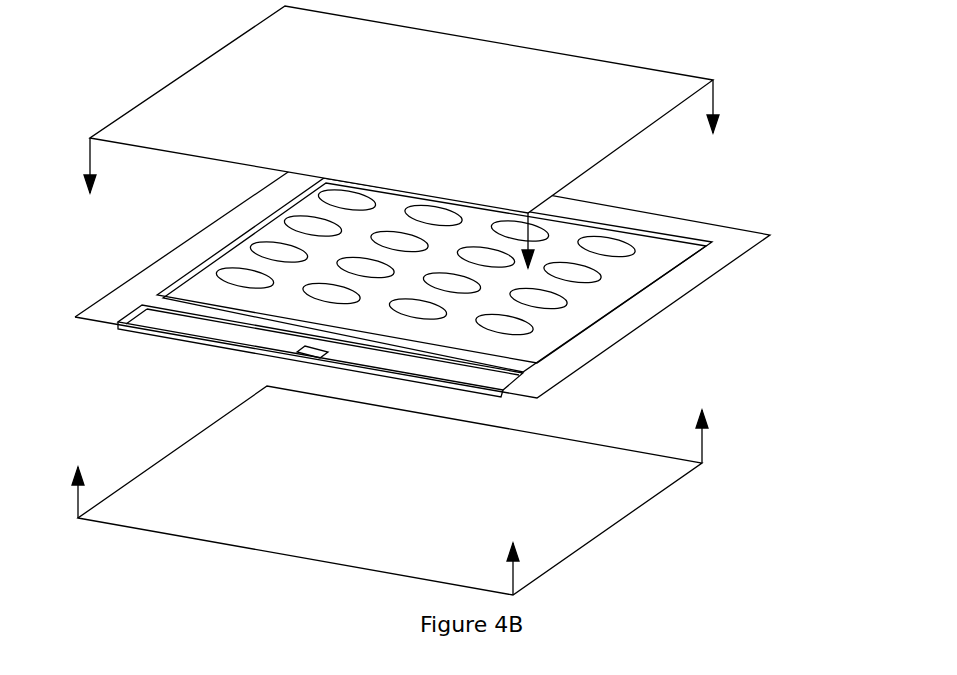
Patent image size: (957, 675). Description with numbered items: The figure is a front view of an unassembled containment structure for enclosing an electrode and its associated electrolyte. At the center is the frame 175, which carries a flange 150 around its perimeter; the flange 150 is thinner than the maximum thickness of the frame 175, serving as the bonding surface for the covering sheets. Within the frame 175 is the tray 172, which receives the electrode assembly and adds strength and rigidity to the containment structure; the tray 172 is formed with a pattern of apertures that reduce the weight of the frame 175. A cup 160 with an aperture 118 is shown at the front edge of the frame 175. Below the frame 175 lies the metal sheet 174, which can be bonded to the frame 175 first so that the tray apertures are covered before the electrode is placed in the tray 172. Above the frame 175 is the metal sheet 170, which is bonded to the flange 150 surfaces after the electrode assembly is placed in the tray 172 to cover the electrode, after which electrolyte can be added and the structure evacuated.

The aperture 118 is at (297, 352).
The flange 150 is at (172, 275).
The cup 160 is at (175, 323).
The metal sheet 170 is at (303, 70).
The tray 172 is at (537, 320).
The metal sheet 174 is at (510, 518).
The frame 175 is at (712, 210).